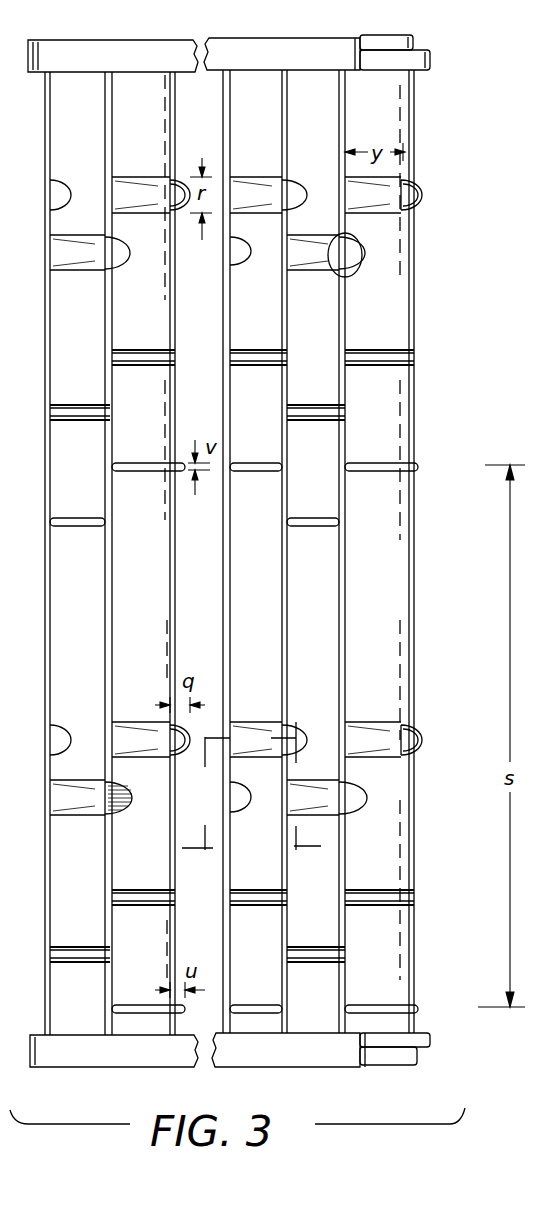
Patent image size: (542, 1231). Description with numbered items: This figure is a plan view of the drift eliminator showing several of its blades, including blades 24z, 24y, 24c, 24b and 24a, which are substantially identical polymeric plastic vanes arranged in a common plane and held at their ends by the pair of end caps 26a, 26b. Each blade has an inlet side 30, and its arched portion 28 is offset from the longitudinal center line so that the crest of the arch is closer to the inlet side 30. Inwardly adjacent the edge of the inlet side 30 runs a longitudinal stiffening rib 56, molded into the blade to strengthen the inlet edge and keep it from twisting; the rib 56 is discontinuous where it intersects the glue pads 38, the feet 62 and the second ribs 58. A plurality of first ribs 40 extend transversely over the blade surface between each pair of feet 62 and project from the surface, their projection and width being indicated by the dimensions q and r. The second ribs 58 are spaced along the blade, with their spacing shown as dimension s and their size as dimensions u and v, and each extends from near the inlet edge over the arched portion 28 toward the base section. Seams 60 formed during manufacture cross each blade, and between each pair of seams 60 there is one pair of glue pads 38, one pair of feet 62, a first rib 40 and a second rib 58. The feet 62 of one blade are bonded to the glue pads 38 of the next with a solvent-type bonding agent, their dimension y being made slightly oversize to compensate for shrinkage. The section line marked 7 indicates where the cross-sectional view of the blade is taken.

The blade 24a is at (394, 591).
The blade 24b is at (334, 591).
The blade 24c is at (276, 591).
The blade 24y is at (158, 591).
The blade 24z is at (94, 591).
The end cap 26a is at (330, 1057).
The end cap 26b is at (312, 48).
The arched portion 28 is at (167, 534).
The inlet side 30 is at (112, 127).
The longitudinal stiffening rib 56 is at (103, 118).
The glue pads 38 is at (367, 246).
The first ribs 40 is at (424, 192).
The feet 62 is at (336, 277).
The second ribs 58 is at (399, 463).
The seams 60 is at (410, 355).
The section line 7- 7 is at (455, 880).